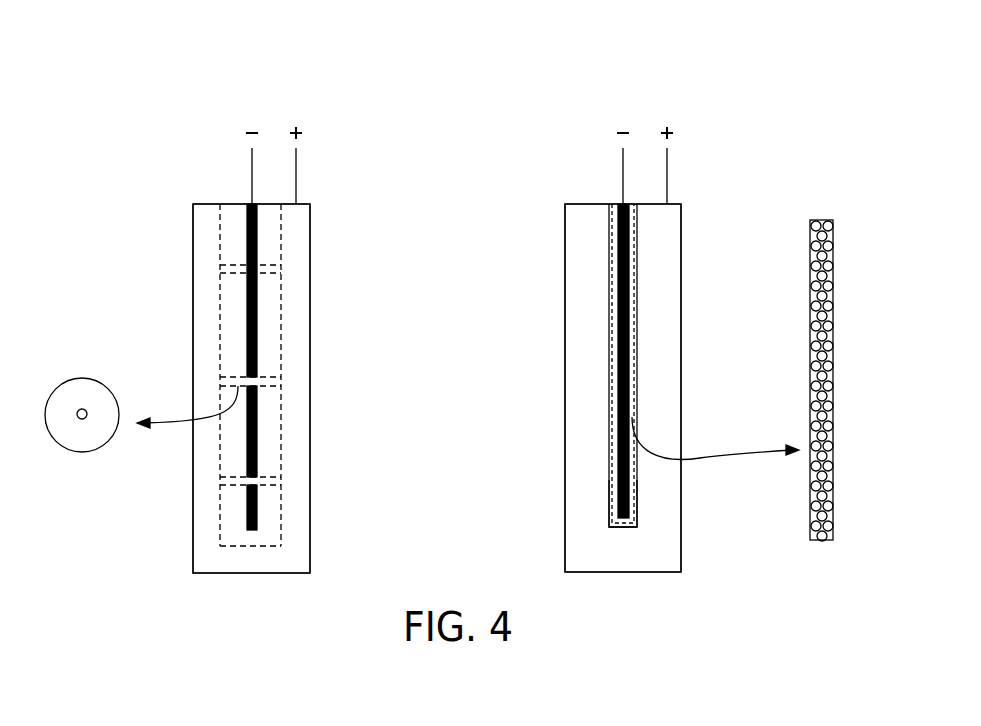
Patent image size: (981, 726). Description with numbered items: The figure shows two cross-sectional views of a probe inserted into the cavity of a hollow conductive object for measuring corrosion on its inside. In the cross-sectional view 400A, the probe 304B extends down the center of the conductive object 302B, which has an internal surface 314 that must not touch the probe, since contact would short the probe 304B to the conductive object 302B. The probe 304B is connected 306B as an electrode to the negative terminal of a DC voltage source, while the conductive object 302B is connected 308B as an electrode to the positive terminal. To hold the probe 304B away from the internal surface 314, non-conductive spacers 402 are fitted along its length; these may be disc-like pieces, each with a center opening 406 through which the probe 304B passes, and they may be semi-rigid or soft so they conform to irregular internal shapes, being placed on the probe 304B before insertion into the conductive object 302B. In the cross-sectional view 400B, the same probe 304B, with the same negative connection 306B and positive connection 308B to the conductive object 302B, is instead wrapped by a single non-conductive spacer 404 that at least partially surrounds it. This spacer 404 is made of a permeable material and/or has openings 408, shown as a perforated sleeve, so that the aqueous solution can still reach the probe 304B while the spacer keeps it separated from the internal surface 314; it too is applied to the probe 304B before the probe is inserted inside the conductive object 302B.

The cross-sectional view 400A is at (324, 96).
The cross-sectional view 400B is at (694, 96).
The conductive object 302B is at (310, 548).
The probe 304B is at (247, 293).
The connection to negative terminal 306B is at (252, 177).
The connection to positive terminal 308B is at (296, 177).
The internal surface 314 is at (281, 431).
The non-conductive spacers 402 is at (266, 374).
The non-conductive spacer 404 is at (635, 505).
The center opening 406 is at (81, 409).
The openings 408 is at (828, 277).